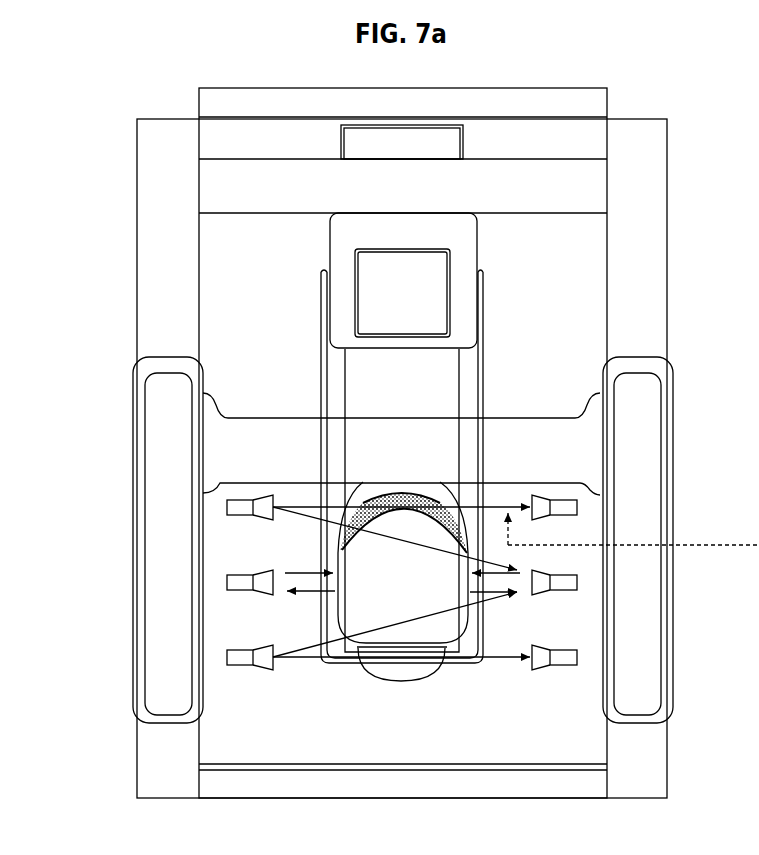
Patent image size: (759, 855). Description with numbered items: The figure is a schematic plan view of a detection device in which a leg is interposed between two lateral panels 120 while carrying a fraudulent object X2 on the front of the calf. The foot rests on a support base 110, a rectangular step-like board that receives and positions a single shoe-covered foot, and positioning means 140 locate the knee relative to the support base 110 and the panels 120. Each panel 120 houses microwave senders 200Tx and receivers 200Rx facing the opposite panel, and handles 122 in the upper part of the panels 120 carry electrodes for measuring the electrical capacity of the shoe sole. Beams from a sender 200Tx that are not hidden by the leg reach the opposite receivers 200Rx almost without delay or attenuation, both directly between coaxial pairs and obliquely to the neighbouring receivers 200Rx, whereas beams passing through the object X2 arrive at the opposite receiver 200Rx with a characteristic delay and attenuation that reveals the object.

The support base 110 is at (419, 730).
The lateral panel 120 is at (185, 285).
The handle 122 is at (185, 532).
The positioning means 140 is at (418, 462).
The fraudulent object X2 is at (402, 492).
The sender 200Tx is at (240, 496).
The receiver 200Rx is at (567, 496).